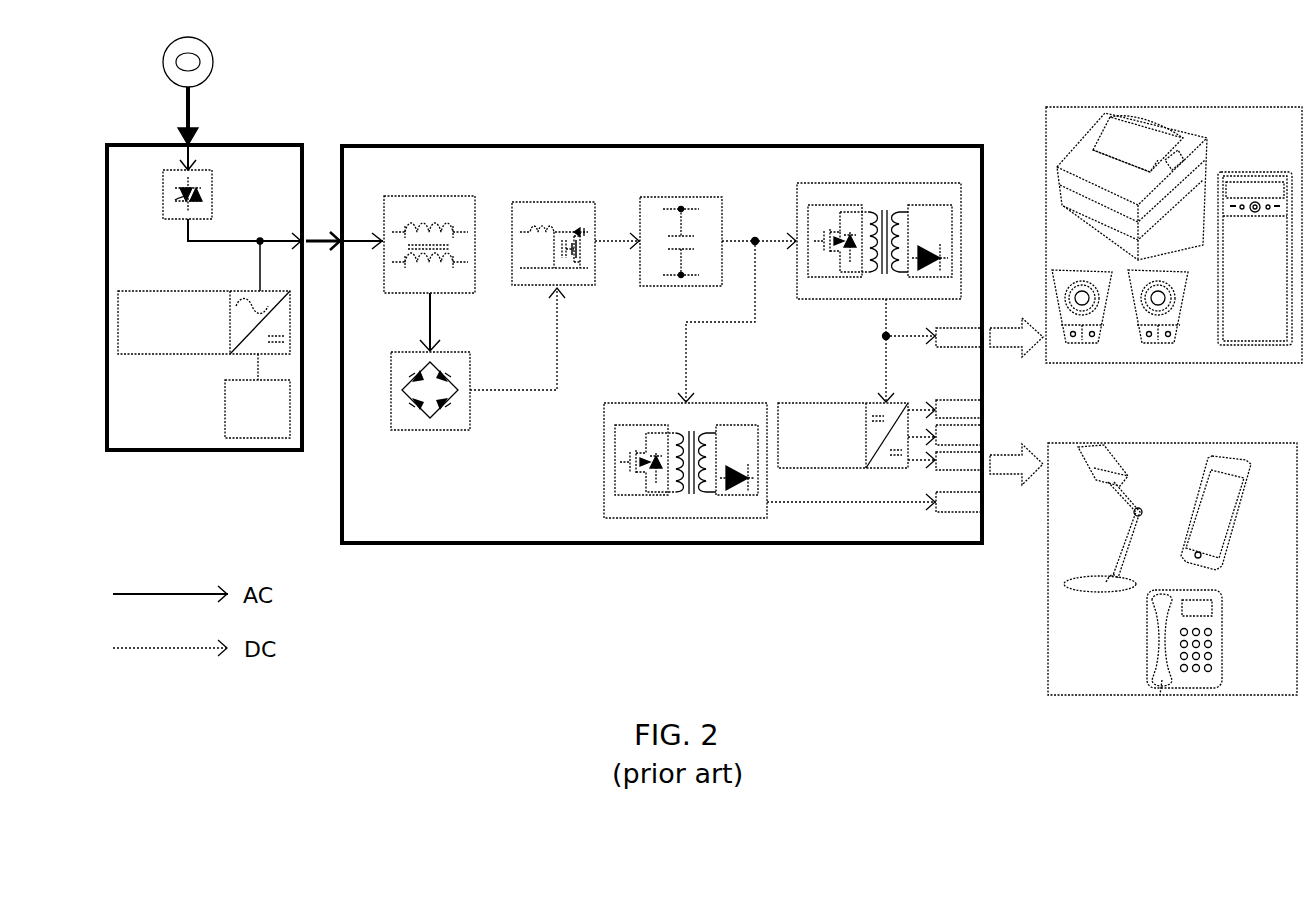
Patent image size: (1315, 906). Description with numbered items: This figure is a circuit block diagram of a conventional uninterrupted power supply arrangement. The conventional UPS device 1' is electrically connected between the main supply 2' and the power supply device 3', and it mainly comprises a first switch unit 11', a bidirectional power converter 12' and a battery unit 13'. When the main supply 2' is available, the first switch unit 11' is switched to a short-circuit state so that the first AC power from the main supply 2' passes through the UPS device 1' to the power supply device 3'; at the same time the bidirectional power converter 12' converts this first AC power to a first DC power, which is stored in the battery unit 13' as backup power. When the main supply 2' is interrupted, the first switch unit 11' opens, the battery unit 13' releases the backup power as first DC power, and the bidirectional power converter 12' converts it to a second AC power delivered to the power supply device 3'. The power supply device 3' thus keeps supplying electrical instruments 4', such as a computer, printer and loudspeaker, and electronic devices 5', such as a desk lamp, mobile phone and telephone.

The UPS device 1' is at (220, 266).
The main supply 2' is at (220, 91).
The power supply device 3' is at (662, 313).
The electrical instruments 4' is at (1165, 200).
The electronic devices 5' is at (1144, 569).
The first switch unit 11' is at (166, 189).
The bidirectional power converter 12' is at (204, 357).
The battery unit 13' is at (244, 428).